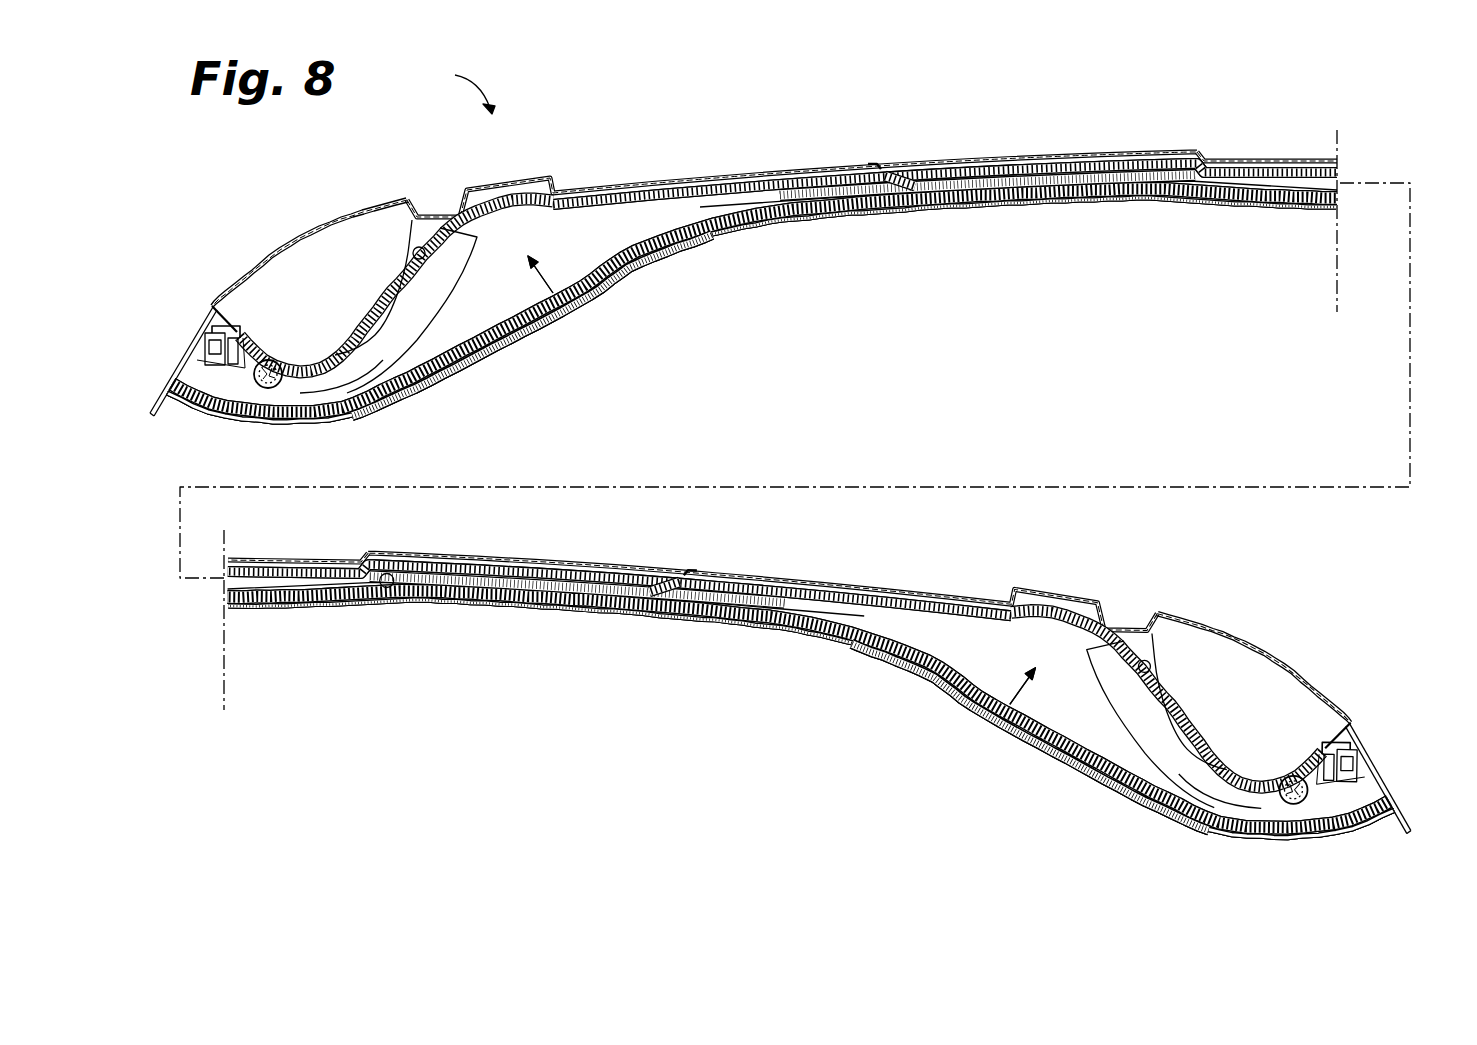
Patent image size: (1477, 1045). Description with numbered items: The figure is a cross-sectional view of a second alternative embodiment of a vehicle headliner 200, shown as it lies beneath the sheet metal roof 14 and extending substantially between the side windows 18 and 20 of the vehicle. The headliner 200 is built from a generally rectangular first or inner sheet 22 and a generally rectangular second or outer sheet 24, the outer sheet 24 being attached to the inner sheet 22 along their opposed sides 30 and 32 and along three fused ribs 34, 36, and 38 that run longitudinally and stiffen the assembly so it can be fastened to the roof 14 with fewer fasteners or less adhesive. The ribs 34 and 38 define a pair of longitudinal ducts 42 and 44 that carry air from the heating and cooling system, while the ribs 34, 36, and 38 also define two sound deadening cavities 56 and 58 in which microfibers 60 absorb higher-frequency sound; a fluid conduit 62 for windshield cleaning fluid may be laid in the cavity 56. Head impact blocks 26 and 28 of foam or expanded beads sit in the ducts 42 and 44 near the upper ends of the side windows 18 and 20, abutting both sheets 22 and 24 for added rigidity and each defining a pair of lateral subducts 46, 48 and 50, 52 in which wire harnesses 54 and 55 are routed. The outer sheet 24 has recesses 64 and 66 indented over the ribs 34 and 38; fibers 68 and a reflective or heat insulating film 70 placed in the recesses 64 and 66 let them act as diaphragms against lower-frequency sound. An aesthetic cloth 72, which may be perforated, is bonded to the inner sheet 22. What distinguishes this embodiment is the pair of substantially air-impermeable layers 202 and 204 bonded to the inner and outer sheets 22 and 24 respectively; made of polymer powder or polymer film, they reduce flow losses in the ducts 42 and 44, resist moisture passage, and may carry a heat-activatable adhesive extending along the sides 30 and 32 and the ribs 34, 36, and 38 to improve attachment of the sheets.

The sheet metal roof 14 is at (1200, 157).
The side window 18 is at (1367, 762).
The side window 20 is at (197, 337).
The first sheet 22 is at (645, 262).
The second sheet 24 is at (528, 188).
The head impact block 26 is at (1177, 770).
The head impact block 28 is at (383, 357).
The opposed side 30 is at (1362, 783).
The opposed side 32 is at (193, 357).
The fused rib 34 is at (657, 617).
The fused rib 36 is at (1223, 198).
The fused rib 38 is at (895, 207).
The longitudinal duct 42 is at (993, 717).
The longitudinal duct 44 is at (560, 297).
The lateral subduct 46 is at (1073, 720).
The lateral subduct 48 is at (1312, 800).
The lateral subduct 50 is at (487, 310).
The lateral subduct 52 is at (247, 387).
The wire harness 54 is at (1273, 800).
The wire harness 55 is at (281, 387).
The sound deadening cavity 56 is at (465, 566).
The sound deadening cavity 58 is at (1103, 166).
The microfibers 60 is at (1017, 177).
The fluid conduit 62 is at (403, 595).
The recess 64 is at (670, 578).
The recess 66 is at (902, 182).
The fibers 68 is at (830, 180).
The reflective or heat insulating film 70 is at (790, 170).
The cloth 72 is at (1046, 207).
The headliner 200 is at (451, 87).
The first air-impermeable layer 202 is at (541, 300).
The second air-impermeable layer 204 is at (507, 213).